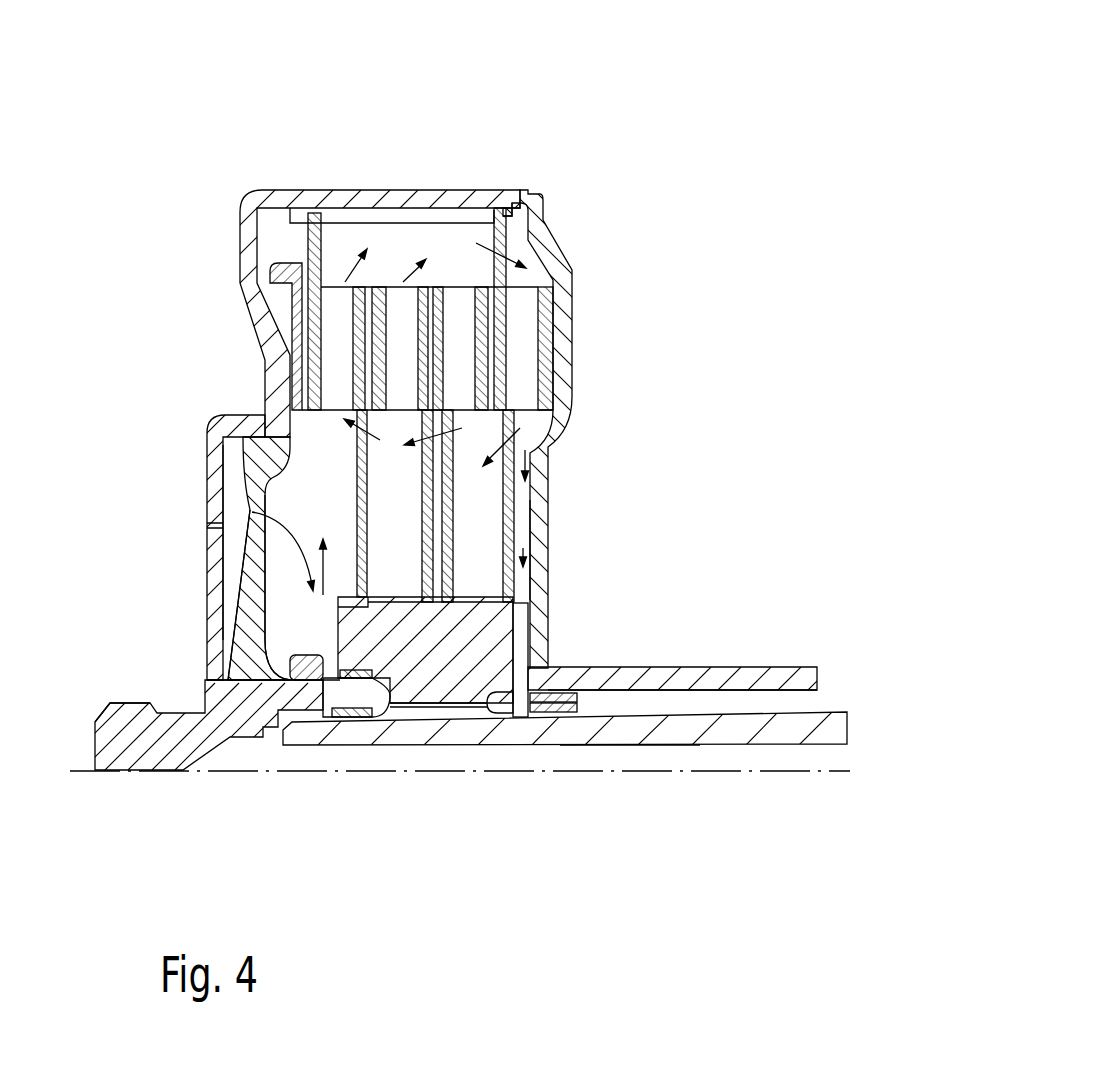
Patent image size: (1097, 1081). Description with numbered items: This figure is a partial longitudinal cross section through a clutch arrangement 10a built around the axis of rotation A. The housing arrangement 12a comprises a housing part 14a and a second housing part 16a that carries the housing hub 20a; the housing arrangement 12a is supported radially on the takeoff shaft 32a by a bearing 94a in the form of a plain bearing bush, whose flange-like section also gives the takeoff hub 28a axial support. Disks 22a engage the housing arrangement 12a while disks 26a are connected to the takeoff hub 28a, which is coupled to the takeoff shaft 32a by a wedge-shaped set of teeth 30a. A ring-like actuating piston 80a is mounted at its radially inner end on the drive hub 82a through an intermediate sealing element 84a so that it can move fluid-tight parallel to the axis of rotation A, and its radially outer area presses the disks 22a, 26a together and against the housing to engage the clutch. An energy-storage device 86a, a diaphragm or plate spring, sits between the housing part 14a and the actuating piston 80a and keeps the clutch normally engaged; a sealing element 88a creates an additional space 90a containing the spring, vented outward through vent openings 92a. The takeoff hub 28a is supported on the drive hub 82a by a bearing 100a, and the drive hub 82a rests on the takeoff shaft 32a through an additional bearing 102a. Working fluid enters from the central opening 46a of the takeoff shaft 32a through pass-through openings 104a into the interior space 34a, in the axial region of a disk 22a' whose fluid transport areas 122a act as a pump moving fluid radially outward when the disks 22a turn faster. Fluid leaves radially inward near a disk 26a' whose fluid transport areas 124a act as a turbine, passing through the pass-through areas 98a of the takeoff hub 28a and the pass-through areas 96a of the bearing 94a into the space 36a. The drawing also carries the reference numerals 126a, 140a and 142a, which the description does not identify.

The clutch arrangement 10a is at (517, 442).
The housing arrangement 12a is at (447, 205).
The fluid transport areas 122a is at (332, 207).
The second housing part 16a is at (577, 350).
The interior space 34a is at (545, 203).
The disks 22a is at (461, 250).
The disk 22a' is at (232, 289).
The fluid transport areas 124a is at (520, 313).
The column 126a is at (545, 287).
The actuating piston 80a is at (298, 294).
The housing part 14a is at (210, 445).
The sealing element 88a is at (233, 455).
The gap 140a is at (233, 507).
The vent openings 92a is at (212, 537).
The additional space 90a is at (240, 580).
The energy-storage device 86a is at (258, 612).
The pass-through openings 104a is at (285, 660).
The disks 26a is at (523, 494).
The disk 26a' is at (602, 506).
The wall 142a is at (540, 543).
The pass-through areas 98a is at (528, 635).
The bearing 94a is at (503, 708).
The pass-through areas 96a is at (533, 713).
The housing hub 20a is at (713, 670).
The space 36a is at (790, 698).
The takeoff shaft 32a is at (660, 732).
The central opening 46a is at (623, 748).
The takeoff hub 28a is at (478, 668).
The wedge-shaped set of teeth 30a is at (420, 712).
The bearing 100a is at (340, 720).
The additional bearing 102a is at (358, 722).
The drive hub 82a is at (202, 745).
The intermediate sealing element 84a is at (215, 748).
The axis of rotation A is at (80, 774).